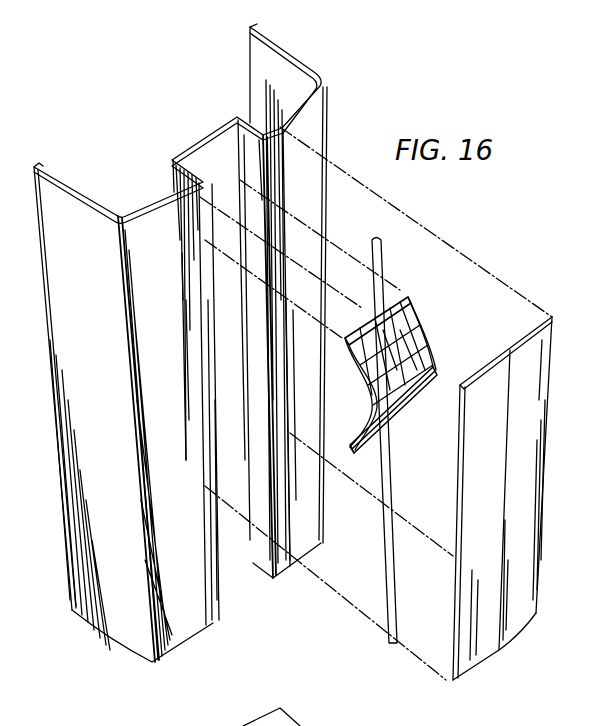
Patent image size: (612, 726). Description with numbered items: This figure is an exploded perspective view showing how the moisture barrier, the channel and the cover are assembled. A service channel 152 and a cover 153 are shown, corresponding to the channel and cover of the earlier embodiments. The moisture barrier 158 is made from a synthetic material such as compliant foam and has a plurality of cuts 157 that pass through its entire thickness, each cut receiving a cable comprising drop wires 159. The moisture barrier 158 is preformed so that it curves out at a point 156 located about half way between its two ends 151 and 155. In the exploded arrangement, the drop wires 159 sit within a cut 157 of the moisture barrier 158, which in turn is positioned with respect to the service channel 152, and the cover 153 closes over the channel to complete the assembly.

The end 151 is at (346, 445).
The service channel 152 is at (228, 573).
The cover 153 is at (543, 408).
The end 155 is at (408, 296).
The curve-out point 156 is at (378, 407).
The cuts 157 is at (430, 363).
The moisture barrier 158 is at (412, 322).
The drop wires 159 is at (382, 262).